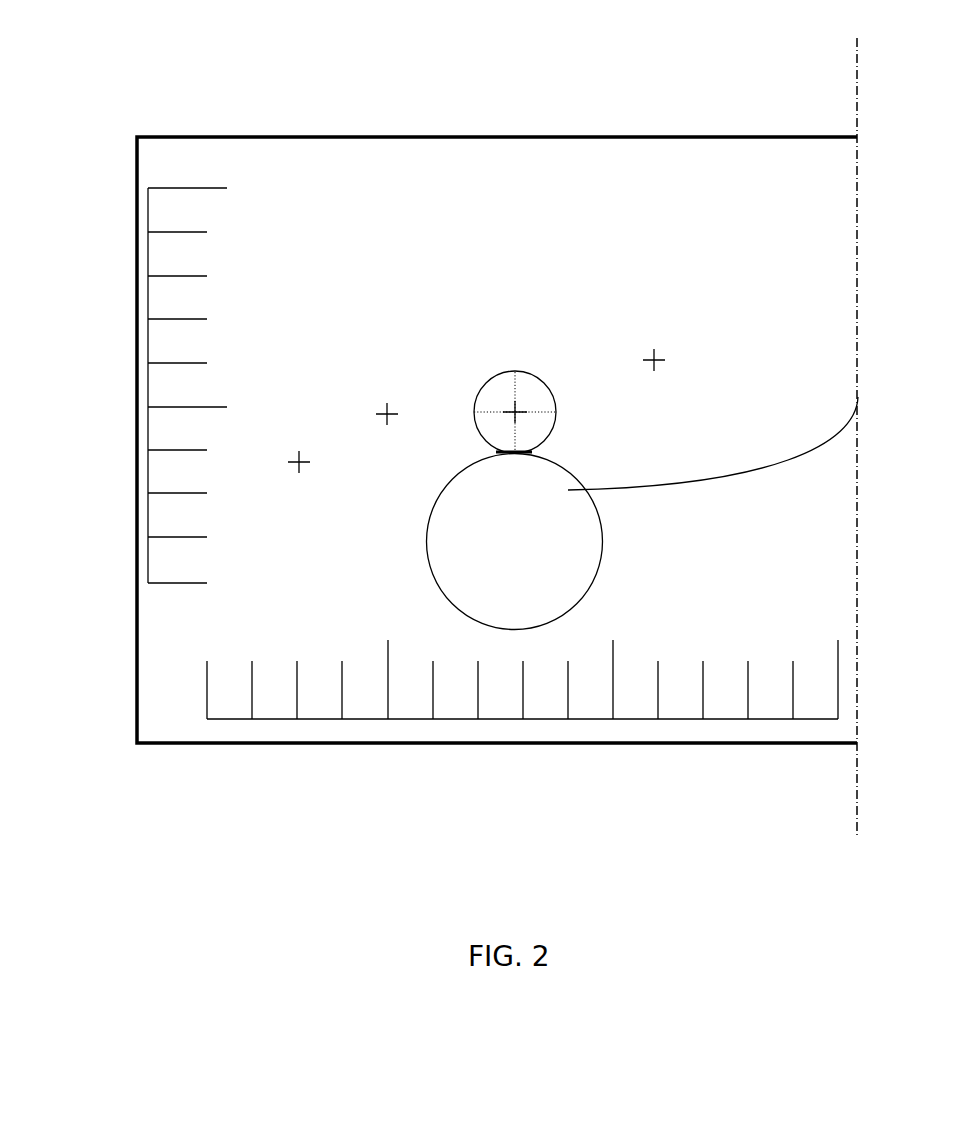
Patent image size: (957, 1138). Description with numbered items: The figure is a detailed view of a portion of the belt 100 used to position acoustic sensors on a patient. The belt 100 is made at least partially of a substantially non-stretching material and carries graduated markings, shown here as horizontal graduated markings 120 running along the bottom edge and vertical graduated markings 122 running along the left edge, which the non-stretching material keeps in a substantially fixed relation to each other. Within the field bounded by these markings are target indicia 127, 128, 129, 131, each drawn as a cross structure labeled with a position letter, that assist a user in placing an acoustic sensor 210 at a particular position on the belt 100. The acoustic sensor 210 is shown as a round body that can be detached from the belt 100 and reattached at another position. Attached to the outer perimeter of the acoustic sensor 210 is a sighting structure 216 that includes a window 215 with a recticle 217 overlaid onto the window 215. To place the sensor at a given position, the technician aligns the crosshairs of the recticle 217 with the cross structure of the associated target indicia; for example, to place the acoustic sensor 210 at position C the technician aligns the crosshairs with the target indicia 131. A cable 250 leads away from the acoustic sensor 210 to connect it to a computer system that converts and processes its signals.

The belt 100 is at (259, 135).
The vertical graduated markings 122 is at (148, 438).
The horizontal graduated markings 120 is at (497, 719).
The target indicia 127 is at (304, 438).
The target indicia 128 is at (393, 387).
The target indicia 129 is at (667, 347).
The target indicia 131 is at (507, 405).
The window 215 is at (526, 383).
The sighting structure 216 is at (555, 424).
The recticle 217 is at (537, 410).
The acoustic sensor 210 is at (582, 559).
The cable 250 is at (718, 483).